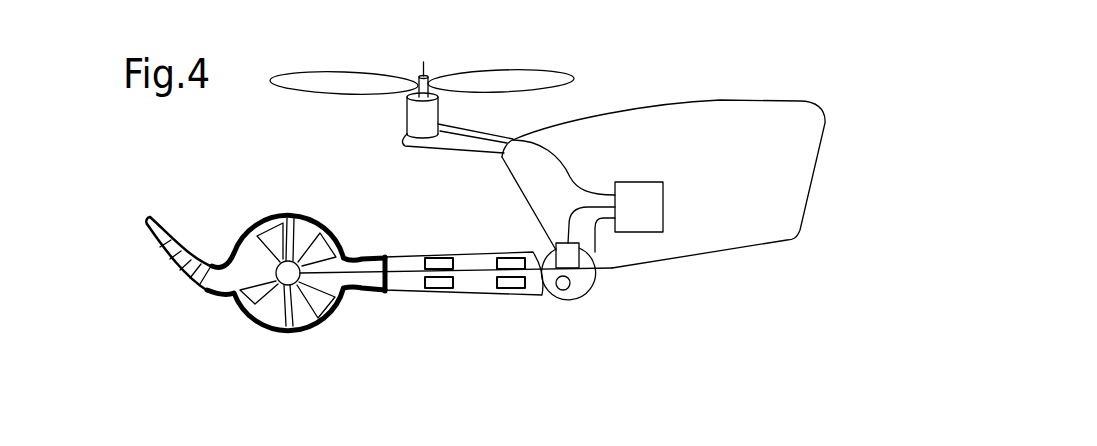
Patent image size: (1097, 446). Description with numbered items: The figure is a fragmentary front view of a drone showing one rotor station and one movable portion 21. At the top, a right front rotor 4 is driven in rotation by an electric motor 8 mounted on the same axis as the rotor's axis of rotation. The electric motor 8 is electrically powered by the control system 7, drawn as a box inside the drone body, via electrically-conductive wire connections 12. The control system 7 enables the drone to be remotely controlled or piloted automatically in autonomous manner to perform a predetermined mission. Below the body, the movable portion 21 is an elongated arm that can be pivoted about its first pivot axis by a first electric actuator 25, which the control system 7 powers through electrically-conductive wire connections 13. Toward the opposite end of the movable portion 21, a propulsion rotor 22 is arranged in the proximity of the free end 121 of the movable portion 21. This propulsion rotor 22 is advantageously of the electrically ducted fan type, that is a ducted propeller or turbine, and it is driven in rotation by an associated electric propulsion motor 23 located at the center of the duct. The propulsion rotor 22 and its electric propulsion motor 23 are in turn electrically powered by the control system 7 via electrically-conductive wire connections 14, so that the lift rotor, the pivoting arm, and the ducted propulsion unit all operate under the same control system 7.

The right front rotor 4 is at (547, 80).
The electric motor 8 is at (405, 120).
The electrically-conductive wire connections 12 is at (558, 159).
The control system 7 is at (663, 212).
The electrically-conductive wire connections 13 is at (569, 213).
The electrically-conductive wire connections 14 is at (593, 247).
The first electric actuator 25 is at (583, 262).
The movable portion 21 is at (447, 318).
The propulsion rotor 22 is at (271, 233).
The electric propulsion motor 23 is at (285, 285).
The free end 121 is at (150, 232).